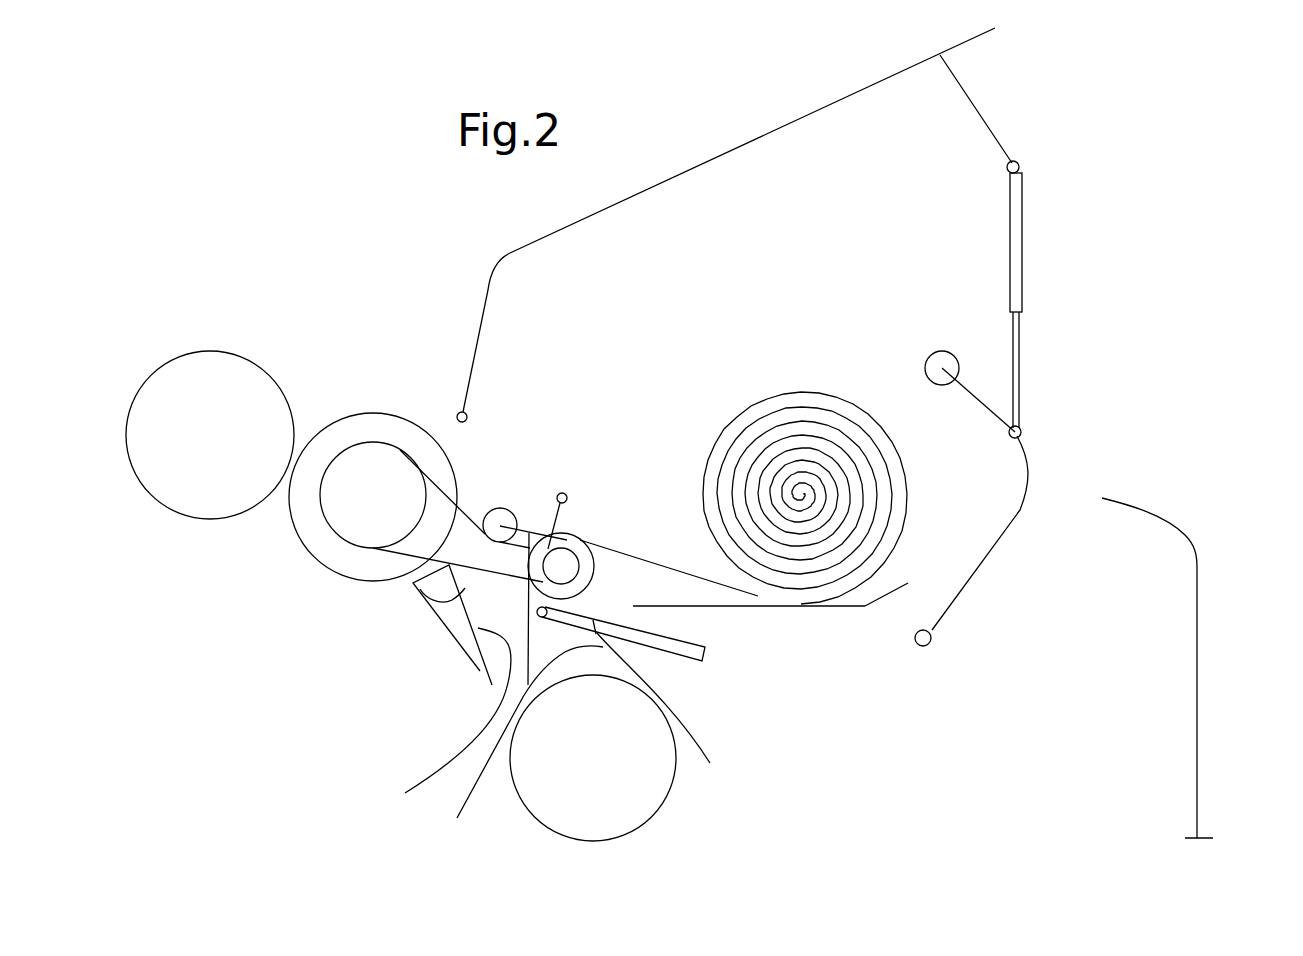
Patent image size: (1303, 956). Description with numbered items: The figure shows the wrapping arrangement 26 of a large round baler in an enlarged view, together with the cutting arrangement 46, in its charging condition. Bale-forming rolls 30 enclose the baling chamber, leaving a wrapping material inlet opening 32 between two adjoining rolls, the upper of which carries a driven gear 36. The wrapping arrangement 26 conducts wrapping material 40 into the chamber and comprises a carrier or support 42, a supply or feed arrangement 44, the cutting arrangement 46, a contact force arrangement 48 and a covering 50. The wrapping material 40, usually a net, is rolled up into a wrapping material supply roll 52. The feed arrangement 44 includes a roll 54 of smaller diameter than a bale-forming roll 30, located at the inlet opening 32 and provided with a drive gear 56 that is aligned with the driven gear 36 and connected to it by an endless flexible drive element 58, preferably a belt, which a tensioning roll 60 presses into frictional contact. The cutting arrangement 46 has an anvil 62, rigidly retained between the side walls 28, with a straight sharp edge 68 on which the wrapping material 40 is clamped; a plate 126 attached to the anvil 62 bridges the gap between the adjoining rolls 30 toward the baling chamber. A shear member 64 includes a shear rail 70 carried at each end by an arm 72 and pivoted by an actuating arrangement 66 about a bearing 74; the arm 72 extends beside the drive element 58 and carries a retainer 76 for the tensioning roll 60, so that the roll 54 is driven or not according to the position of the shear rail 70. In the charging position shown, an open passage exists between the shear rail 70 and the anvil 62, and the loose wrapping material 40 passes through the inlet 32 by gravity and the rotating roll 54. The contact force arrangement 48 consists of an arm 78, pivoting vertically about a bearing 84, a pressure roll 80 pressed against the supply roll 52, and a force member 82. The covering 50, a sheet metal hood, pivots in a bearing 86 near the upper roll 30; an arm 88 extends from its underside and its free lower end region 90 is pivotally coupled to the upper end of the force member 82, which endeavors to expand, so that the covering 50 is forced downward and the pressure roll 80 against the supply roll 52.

The wrapping arrangement 26 is at (338, 185).
The side walls 28 is at (1198, 697).
The bale-forming rolls 30 is at (295, 548).
The wrapping material inlet opening 32 is at (468, 697).
The driven gear 36 is at (365, 442).
The wrapping material 40 is at (668, 557).
The carrier or support 42 is at (843, 607).
The supply or feed arrangement 44 is at (600, 525).
The cutting arrangement 46 is at (402, 662).
The contact force arrangement 48 is at (942, 340).
The covering 50 is at (762, 120).
The wrapping material supply roll 52 is at (717, 428).
The roll 54 is at (594, 578).
The drive gear 56 is at (572, 534).
The endless flexible drive element 58 is at (437, 486).
The tensioning roll 60 is at (494, 510).
The anvil 62 is at (443, 588).
The shear member 64 is at (521, 751).
The actuating arrangement 66 is at (683, 662).
The sharp edge 68 is at (445, 723).
The shear rail 70 is at (666, 715).
The arm 72 is at (533, 603).
The bearing 74 is at (557, 495).
The retainer 76 is at (530, 530).
The arm 78 is at (985, 560).
The pressure roll 80 is at (925, 365).
The force member 82 is at (1022, 262).
The bearing 84 is at (927, 648).
The bearing 86 is at (462, 412).
The arm 88 is at (972, 102).
The free lower end region 90 is at (1020, 168).
The plate 126 is at (478, 675).